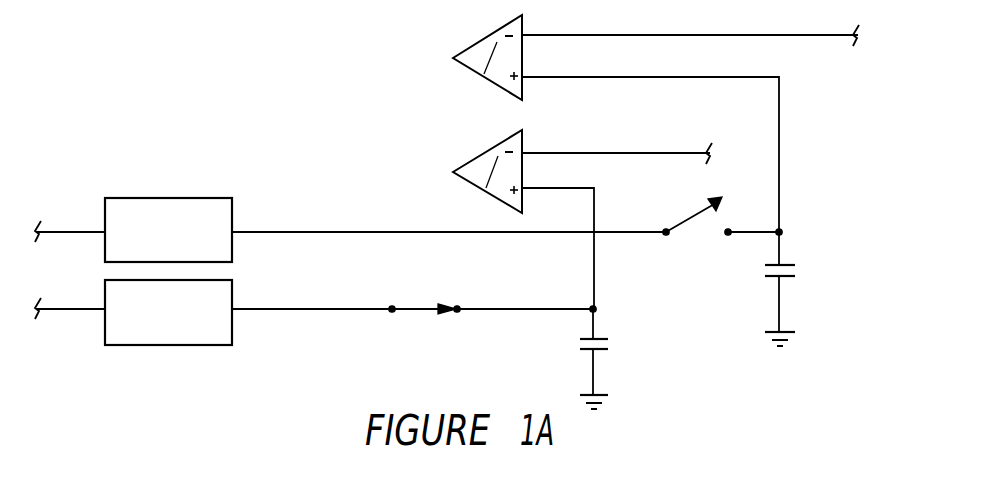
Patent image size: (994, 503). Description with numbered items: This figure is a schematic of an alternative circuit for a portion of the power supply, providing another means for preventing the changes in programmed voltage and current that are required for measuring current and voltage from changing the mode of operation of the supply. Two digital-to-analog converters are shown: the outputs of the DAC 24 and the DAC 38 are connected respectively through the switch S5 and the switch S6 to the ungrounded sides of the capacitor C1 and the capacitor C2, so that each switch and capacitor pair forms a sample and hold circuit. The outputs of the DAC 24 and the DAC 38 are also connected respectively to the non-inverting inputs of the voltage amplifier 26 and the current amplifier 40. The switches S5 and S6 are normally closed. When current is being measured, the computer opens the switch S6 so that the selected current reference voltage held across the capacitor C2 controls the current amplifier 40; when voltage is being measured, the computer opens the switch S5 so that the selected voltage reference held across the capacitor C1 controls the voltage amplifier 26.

The current amplifier 40 is at (500, 88).
The voltage amplifier 26 is at (508, 202).
The DAC 38 is at (101, 249).
The DAC 24 is at (103, 333).
The switch S5 is at (421, 312).
The switch S6 is at (696, 226).
The capacitor C1 is at (609, 341).
The capacitor C2 is at (796, 265).